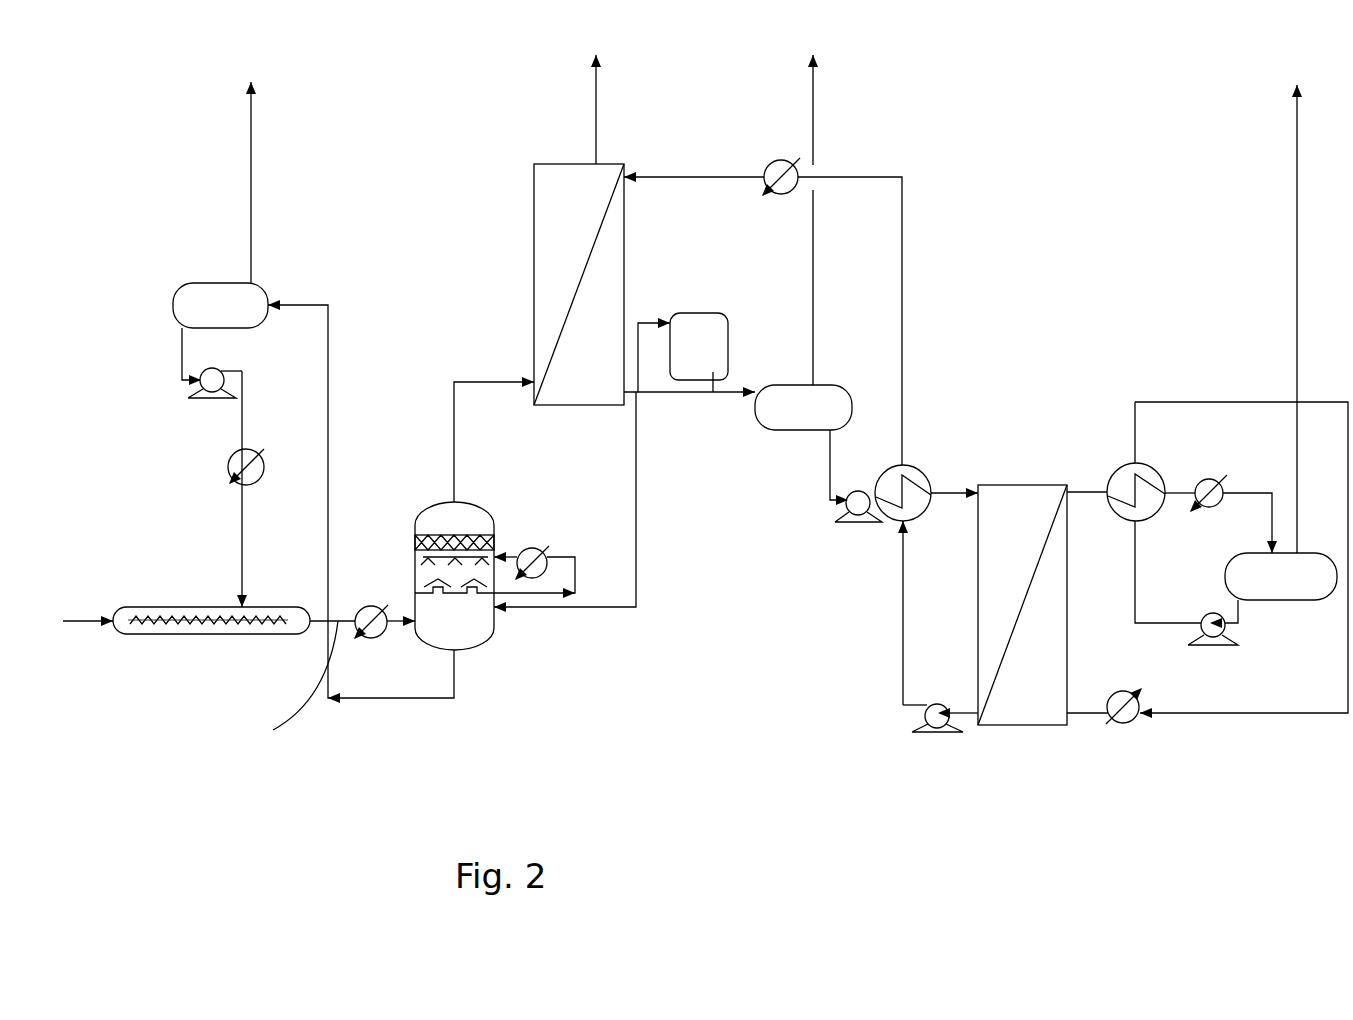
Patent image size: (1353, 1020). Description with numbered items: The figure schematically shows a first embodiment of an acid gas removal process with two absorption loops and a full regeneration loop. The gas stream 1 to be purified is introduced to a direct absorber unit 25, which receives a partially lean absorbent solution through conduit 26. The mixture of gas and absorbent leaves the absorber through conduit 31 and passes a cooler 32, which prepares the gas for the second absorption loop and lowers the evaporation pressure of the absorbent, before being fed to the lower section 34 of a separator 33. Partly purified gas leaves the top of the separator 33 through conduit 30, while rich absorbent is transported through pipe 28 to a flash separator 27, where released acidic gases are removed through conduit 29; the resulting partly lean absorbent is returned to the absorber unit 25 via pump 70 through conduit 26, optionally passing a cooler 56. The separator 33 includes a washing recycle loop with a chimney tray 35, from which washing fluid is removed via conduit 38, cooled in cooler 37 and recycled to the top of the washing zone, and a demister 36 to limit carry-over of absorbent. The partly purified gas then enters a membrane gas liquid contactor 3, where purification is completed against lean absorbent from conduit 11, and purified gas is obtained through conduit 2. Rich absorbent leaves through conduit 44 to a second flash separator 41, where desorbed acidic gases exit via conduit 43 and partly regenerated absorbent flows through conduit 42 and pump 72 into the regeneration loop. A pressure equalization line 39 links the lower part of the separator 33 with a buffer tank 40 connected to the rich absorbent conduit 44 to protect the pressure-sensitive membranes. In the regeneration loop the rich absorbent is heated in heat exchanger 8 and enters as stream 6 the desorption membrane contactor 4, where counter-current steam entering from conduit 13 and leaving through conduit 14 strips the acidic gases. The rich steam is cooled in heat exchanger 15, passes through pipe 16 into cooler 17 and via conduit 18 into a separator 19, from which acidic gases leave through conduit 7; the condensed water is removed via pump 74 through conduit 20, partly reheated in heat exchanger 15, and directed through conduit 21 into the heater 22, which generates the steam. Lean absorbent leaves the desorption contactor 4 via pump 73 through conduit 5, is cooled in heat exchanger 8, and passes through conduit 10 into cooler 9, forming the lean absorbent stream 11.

The gas stream 1 is at (88, 601).
The conduit 2 is at (585, 109).
The membrane gas liquid contactor 3 is at (579, 303).
The desorption membrane contactor 4 is at (1022, 626).
The conduit 5 is at (904, 613).
The stream 6 is at (954, 478).
The conduit 7 is at (1302, 295).
The heat exchanger 8 is at (896, 486).
The cooler 9 is at (779, 160).
The conduit 10 is at (872, 321).
The stream of liquid absorbent 11 is at (694, 166).
The conduit 13 is at (1089, 698).
The conduit 14 is at (1089, 478).
The heat exchanger 15 is at (1147, 504).
The pipe 16 is at (1180, 477).
The cooler 17 is at (1216, 508).
The conduit 18 is at (1250, 506).
The separator 19 is at (1281, 576).
The conduit 20 is at (1186, 513).
The conduit 21 is at (1241, 541).
The heater 22 is at (1137, 718).
The direct absorber unit 25 is at (211, 641).
The conduit 26 is at (222, 489).
The flash separator 27 is at (220, 305).
The pipe 28 is at (361, 501).
The conduit 29 is at (277, 174).
The conduit 30 is at (494, 422).
The conduit 31 is at (293, 695).
The cooler 32 is at (382, 640).
The separator 33 is at (471, 586).
The lower section 34 is at (459, 616).
The chimney tray 35 is at (422, 573).
The demister 36 is at (432, 542).
The cooler 37 is at (540, 549).
The conduit 38 is at (553, 573).
The pressure equalization line 39 is at (589, 502).
The buffer tank 40 is at (683, 335).
The second flash separator 41 is at (803, 407).
The conduit 42 is at (816, 467).
The conduit 43 is at (838, 212).
The conduit 44 is at (689, 398).
The cooler 56 is at (220, 468).
The pump 70 is at (212, 380).
The pump 72 is at (859, 524).
The pump 73 is at (945, 738).
The pump 74 is at (1213, 647).